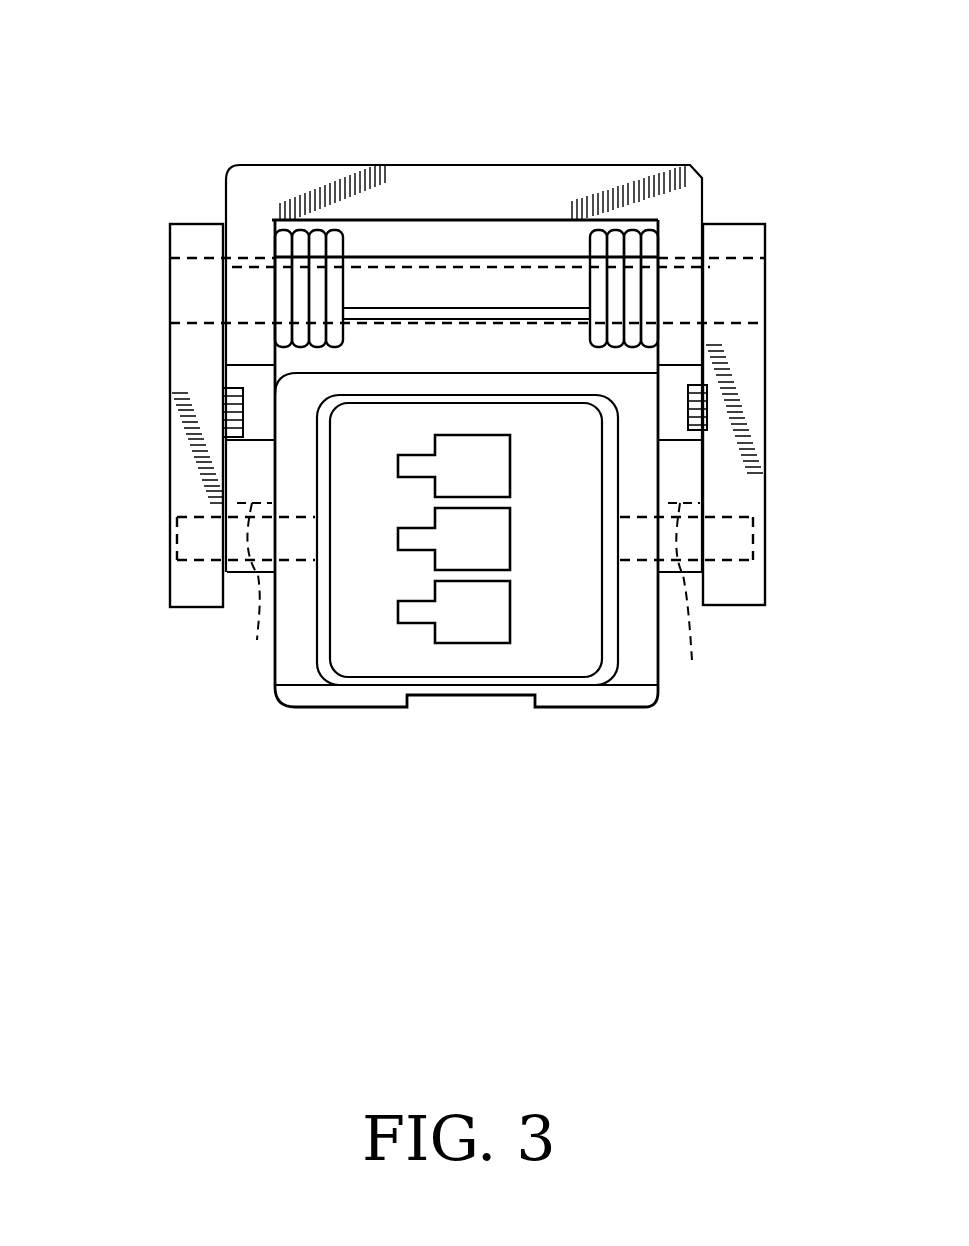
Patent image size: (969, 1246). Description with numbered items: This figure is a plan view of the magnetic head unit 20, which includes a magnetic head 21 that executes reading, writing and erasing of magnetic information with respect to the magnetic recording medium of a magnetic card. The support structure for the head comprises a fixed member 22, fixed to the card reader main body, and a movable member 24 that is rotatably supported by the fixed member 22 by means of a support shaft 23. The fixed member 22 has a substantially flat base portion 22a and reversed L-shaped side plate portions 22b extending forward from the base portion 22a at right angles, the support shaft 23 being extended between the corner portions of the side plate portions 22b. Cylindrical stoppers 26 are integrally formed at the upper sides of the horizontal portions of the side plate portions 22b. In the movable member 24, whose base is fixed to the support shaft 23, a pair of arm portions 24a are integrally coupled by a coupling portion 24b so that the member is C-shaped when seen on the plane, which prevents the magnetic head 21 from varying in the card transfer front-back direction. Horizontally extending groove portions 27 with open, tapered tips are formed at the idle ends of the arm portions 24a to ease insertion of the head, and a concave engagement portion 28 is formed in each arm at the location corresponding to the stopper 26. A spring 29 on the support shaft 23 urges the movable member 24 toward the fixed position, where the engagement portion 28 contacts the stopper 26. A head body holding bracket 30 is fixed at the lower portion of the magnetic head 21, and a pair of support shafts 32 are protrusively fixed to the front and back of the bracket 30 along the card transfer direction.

The magnetic head unit 20 is at (128, 122).
The magnetic head 21 is at (555, 660).
The fixed member 22 is at (160, 352).
The base portion 22a is at (418, 268).
The side plate portion 22b is at (168, 478).
The support shaft 23 is at (508, 285).
The movable member 24 is at (400, 160).
The arm portion 24a is at (242, 575).
The coupling portion 24b is at (572, 185).
The stopper 26 is at (240, 417).
The groove portion 27 is at (474, 603).
The concave engagement portion 28 is at (228, 380).
The spring 29 is at (312, 222).
The head body holding bracket 30 is at (320, 712).
The support shaft 32 is at (175, 540).